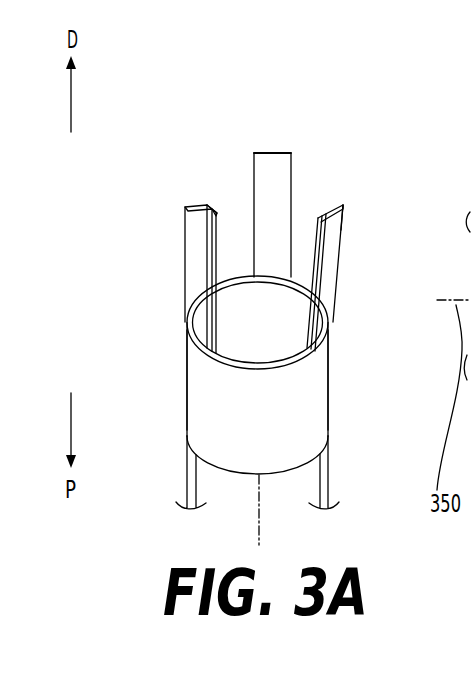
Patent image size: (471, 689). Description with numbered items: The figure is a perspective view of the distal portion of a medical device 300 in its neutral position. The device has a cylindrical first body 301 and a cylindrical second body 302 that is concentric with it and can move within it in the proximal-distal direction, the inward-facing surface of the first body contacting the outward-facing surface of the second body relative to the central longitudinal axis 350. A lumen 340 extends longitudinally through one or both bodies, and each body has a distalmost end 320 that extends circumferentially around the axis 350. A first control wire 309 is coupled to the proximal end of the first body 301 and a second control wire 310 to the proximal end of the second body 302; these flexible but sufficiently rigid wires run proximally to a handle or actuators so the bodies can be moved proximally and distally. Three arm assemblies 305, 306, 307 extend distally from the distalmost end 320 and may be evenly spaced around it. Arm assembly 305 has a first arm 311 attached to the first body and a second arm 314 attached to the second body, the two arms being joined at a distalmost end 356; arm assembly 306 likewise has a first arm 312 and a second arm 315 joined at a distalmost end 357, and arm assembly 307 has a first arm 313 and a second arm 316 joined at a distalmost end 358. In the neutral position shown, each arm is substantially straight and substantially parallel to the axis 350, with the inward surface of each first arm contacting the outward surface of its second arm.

The medical device 300 is at (392, 124).
The first body 301 is at (329, 407).
The second body 302 is at (245, 297).
The arm assembly 305 is at (351, 262).
The arm assembly 306 is at (168, 264).
The arm assembly 307 is at (268, 142).
The first control wire 309 is at (330, 489).
The second control wire 310 is at (188, 495).
The first arm 311 is at (330, 293).
The first arm 312 is at (188, 320).
The first arm 313 is at (246, 165).
The second arm 314 is at (341, 204).
The second arm 315 is at (217, 211).
The second arm 316 is at (275, 160).
The distalmost end 320 is at (279, 352).
The lumen 340 is at (270, 306).
The central longitudinal axis 350 is at (263, 525).
The distalmost end 356 is at (344, 205).
The distalmost end 357 is at (184, 206).
The distalmost end 358 is at (260, 151).